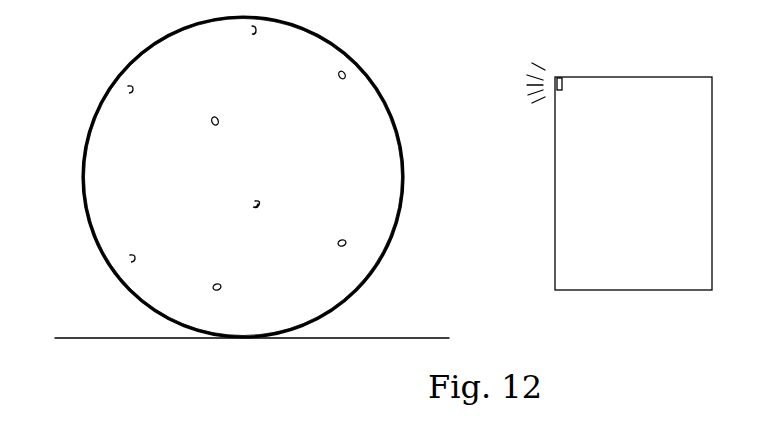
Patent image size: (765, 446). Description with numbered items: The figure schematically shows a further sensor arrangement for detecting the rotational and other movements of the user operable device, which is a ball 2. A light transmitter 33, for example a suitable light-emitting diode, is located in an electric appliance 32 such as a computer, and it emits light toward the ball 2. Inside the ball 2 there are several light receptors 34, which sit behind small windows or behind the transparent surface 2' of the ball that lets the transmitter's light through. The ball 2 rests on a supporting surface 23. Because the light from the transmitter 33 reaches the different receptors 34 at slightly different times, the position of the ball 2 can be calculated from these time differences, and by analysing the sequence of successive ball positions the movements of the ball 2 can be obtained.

The ball 2 is at (226, 177).
The transparent surface 2' is at (243, 177).
The ground surface 23 is at (372, 338).
The electric appliance 32 is at (633, 183).
The light transmitter 33 is at (559, 77).
The light receptors 34 is at (250, 27).